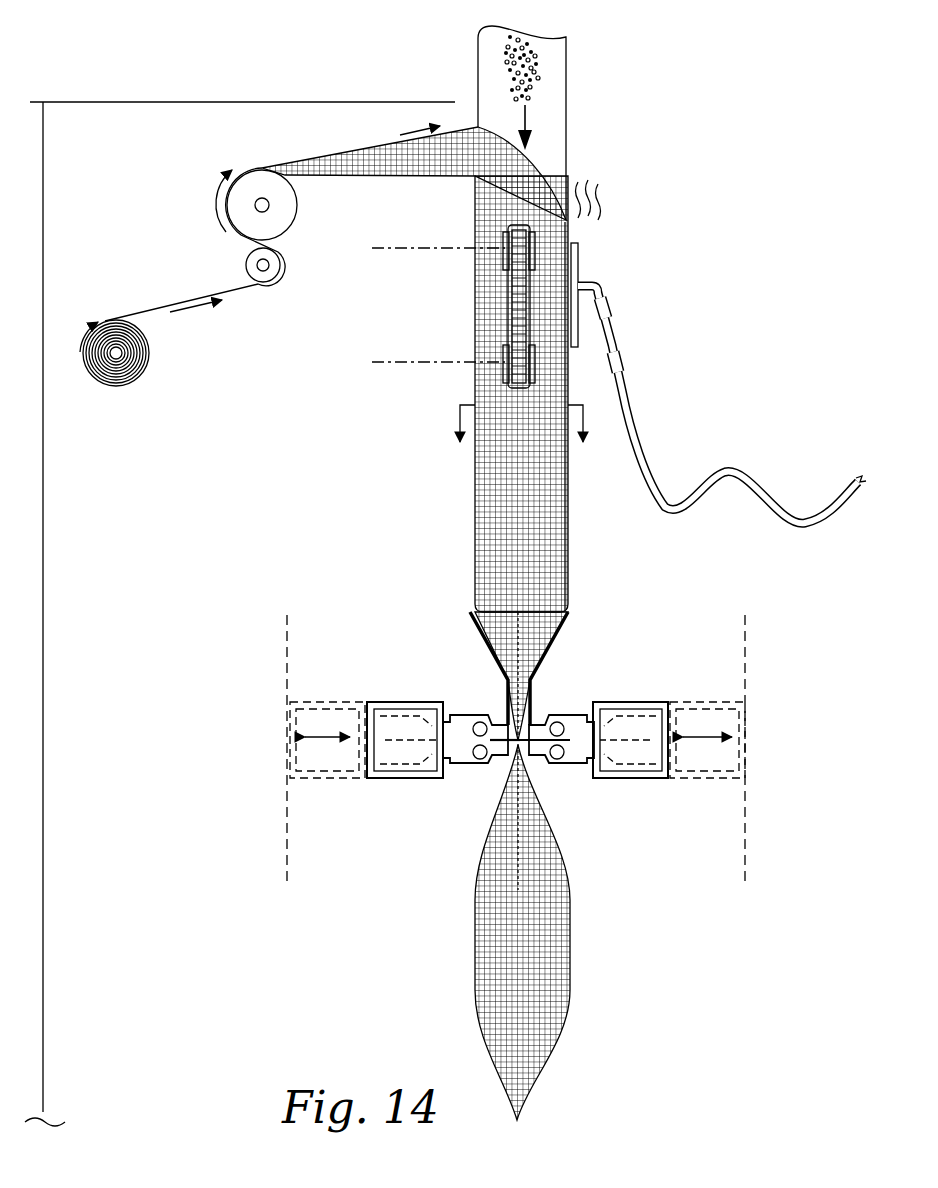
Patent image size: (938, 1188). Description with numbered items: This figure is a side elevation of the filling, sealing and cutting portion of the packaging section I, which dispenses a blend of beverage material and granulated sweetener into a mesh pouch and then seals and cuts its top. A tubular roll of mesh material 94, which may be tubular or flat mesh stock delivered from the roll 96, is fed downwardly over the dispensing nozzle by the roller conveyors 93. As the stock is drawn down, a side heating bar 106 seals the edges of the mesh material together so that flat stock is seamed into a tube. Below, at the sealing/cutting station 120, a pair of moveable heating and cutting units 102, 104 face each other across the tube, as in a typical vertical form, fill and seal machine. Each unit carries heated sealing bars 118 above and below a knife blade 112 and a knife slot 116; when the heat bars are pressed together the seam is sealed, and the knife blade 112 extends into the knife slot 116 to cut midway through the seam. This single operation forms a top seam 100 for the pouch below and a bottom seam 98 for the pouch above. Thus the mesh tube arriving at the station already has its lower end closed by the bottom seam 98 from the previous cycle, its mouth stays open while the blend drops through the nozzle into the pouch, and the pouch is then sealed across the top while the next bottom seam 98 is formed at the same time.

The packaging section I is at (240, 614).
The tubular roll of mesh material 94 is at (412, 176).
The roller conveyors 93 is at (512, 312).
The side heating bar 106 is at (580, 268).
The roll 96 is at (150, 365).
The sealing/cutting station 120 is at (420, 662).
The knife blade 112 is at (496, 738).
The knife slot 116 is at (562, 736).
The sealing and cutting unit 104 is at (648, 700).
The sealing and cutting unit 102 is at (396, 782).
The heated sealing bars 118 is at (490, 766).
The top seam 100 is at (532, 784).
The bottom seam 98 is at (522, 706).